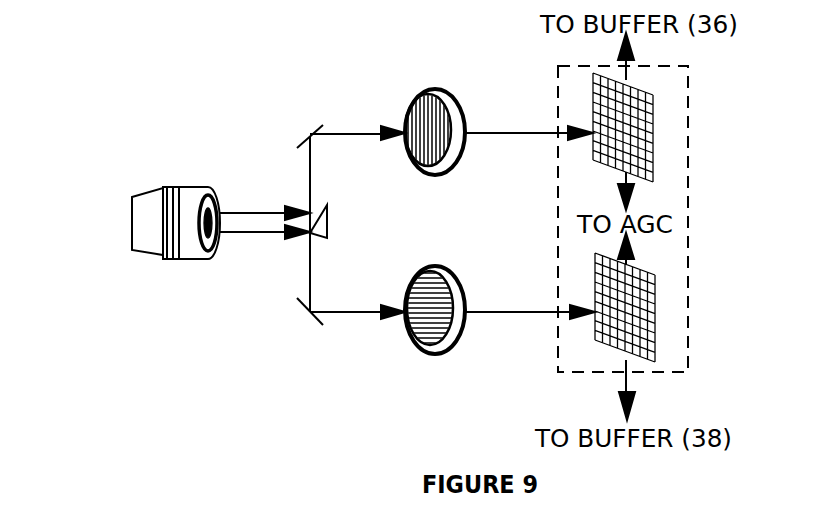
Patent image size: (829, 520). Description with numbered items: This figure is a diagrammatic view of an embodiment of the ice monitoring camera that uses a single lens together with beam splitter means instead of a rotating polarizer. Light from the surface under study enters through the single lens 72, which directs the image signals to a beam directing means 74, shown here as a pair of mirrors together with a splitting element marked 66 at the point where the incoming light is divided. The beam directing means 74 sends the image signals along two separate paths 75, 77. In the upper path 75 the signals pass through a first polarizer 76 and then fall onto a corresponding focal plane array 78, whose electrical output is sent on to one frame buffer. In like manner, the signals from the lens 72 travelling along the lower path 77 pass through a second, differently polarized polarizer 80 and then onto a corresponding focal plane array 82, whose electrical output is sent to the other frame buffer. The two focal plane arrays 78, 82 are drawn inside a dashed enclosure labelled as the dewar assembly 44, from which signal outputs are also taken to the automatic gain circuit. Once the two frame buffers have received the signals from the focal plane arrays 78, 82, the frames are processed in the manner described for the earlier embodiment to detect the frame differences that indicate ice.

The single lens 72 is at (132, 224).
The beam splitting prism 66 is at (367, 241).
The beam directing means 74 is at (281, 273).
The first path 75 is at (313, 169).
The second path 77 is at (313, 272).
The first polarizer 76 is at (437, 90).
The second polarizer 80 is at (437, 352).
The focal plane array 78 is at (653, 116).
The focal plane array 82 is at (655, 347).
The dewar assembly 44 is at (688, 324).